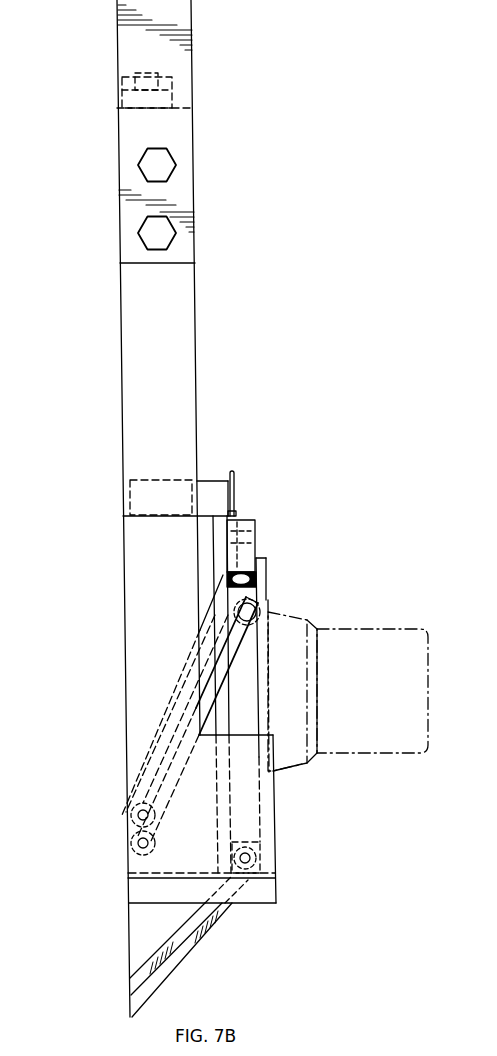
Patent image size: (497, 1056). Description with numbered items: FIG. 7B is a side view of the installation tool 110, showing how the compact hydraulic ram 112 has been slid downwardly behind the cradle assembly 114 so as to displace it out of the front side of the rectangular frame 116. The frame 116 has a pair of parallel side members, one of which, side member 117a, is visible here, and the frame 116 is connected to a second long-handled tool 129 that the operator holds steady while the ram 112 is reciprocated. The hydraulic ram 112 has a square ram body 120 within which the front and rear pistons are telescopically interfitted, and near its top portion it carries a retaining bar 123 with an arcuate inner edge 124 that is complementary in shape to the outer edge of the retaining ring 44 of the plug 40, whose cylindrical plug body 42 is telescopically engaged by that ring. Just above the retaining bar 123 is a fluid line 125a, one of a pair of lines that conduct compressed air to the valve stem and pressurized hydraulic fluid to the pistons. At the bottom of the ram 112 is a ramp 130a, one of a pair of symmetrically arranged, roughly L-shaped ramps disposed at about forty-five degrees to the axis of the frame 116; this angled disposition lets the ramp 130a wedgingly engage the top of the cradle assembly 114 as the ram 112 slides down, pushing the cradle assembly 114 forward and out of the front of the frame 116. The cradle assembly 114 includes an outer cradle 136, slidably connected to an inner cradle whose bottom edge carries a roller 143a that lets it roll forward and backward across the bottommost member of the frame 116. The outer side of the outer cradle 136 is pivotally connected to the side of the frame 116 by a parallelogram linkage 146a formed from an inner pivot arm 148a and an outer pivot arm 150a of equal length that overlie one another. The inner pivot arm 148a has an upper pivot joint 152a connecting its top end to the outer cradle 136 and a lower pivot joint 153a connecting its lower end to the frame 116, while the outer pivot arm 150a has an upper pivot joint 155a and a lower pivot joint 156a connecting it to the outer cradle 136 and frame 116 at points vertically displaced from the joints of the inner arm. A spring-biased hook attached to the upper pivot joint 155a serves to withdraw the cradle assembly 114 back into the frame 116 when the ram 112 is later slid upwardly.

The installation tool 110 is at (267, 88).
The compact hydraulic ram 112 is at (121, 680).
The cradle assembly 114 is at (204, 640).
The rectangular frame 116 is at (167, 376).
The side member 117a is at (158, 420).
The square ram body 120 is at (126, 706).
The retaining bar 123 is at (253, 530).
The arcuate inner edge 124 is at (243, 570).
The fluid line 125a is at (236, 479).
The second long-handled tool 129 is at (135, 52).
The ramp 130a is at (145, 932).
The outer cradle 136 is at (243, 704).
The roller 143a is at (257, 858).
The parallelogram linkage 146a is at (204, 678).
The inner pivot arm 148a is at (212, 716).
The outer pivot arm 150a is at (222, 608).
The upper pivot joint 152a is at (258, 612).
The lower pivot joint 153a is at (138, 843).
The upper pivot joint 155a is at (228, 584).
The lower pivot joint 156a is at (138, 812).
The plug 40 is at (398, 582).
The cylindrical plug body 42 is at (367, 697).
The retaining ring 44 is at (265, 573).